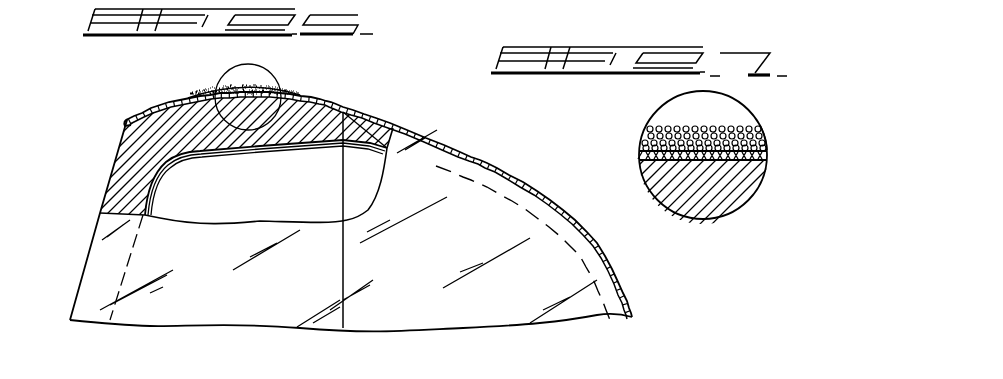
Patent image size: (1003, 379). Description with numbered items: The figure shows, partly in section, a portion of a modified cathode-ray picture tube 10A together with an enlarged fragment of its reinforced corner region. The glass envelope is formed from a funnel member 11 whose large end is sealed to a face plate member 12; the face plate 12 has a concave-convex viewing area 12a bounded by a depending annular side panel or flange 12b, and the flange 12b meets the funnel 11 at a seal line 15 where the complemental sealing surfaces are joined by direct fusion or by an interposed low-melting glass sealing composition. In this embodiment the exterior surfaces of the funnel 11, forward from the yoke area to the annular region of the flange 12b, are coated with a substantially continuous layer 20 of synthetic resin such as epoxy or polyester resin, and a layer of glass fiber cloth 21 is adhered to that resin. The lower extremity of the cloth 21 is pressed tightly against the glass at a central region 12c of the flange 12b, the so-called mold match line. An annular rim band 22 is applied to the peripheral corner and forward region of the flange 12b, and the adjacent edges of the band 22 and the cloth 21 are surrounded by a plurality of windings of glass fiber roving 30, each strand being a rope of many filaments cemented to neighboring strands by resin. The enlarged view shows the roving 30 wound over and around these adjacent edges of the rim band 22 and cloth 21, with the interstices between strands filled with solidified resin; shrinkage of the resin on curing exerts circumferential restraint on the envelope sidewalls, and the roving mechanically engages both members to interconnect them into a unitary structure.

In FIG. 5, the tube 10A is at (637, 298).
In FIG. 5, the funnel member 11 is at (583, 250).
In FIG. 5, the face plate member 12 is at (97, 229).
In FIG. 5, the viewing area 12a is at (128, 162).
In FIG. 5, the face plate flange 12b is at (175, 120).
In FIG. 7, the face plate flange 12b is at (722, 208).
In FIG. 5, the central region of face plate flange 12c is at (239, 100).
In FIG. 5, the seal line 15 is at (343, 308).
In FIG. 5, the layer of synthetic resin 20 is at (485, 113).
In FIG. 7, the layer of synthetic resin 20 is at (648, 160).
In FIG. 5, the glass fiber cloth 21 is at (497, 162).
In FIG. 7, the glass fiber cloth 21 is at (767, 152).
In FIG. 5, the rim band 22 is at (140, 108).
In FIG. 7, the rim band 22 is at (645, 150).
In FIG. 5, the glass fiber roving 30 is at (258, 87).
In FIG. 7, the glass fiber roving 30 is at (672, 122).